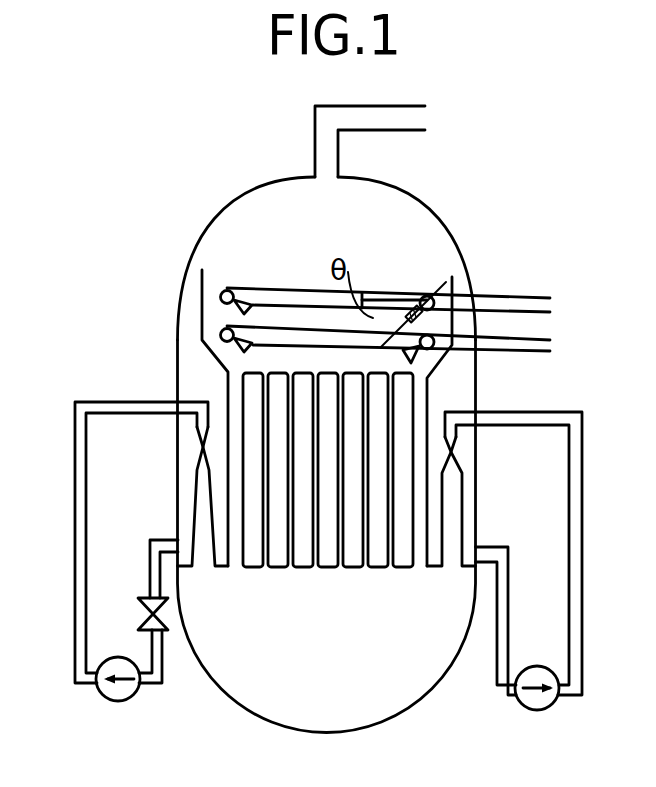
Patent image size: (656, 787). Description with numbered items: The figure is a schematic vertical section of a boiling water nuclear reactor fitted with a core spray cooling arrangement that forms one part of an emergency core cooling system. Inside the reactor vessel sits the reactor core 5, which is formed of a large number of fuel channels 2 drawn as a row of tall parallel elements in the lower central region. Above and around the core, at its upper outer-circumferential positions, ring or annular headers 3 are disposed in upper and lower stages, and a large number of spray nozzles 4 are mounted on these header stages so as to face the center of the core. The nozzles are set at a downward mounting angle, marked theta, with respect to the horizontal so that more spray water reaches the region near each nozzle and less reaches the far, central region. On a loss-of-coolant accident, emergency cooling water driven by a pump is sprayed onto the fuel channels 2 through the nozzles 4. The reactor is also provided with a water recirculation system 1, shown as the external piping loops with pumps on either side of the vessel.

The water recirculation system 1 is at (80, 564).
The fuel channels 2 is at (253, 394).
The ring or annular headers 3 is at (283, 292).
The spray nozzles 4 is at (418, 316).
The reactor core 5 is at (235, 572).